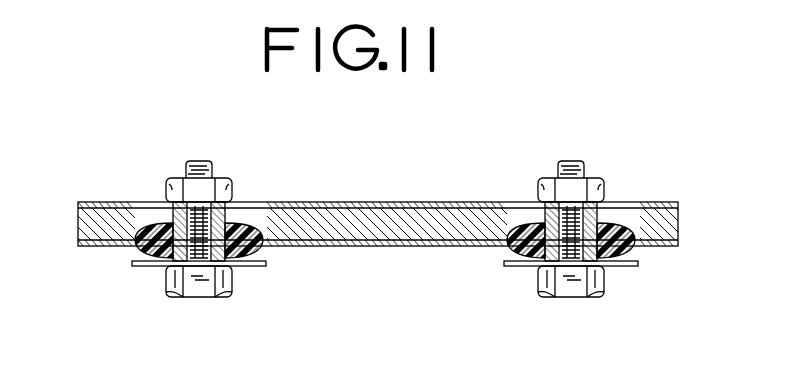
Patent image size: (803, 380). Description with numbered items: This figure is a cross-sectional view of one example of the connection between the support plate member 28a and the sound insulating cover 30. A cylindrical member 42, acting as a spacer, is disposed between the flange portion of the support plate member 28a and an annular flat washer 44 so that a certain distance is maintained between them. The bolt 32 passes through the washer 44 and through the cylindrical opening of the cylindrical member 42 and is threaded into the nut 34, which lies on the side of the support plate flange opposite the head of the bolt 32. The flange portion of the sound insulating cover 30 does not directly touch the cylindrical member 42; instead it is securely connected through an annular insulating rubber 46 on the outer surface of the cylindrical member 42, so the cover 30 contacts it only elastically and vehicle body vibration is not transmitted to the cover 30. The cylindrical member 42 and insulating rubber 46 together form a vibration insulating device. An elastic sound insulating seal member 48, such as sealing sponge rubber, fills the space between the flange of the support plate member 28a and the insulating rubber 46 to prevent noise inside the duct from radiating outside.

The support plate member 28a is at (322, 202).
The elastic sound insulating seal member 48 is at (400, 210).
The sound insulating cover 30 is at (368, 247).
The nut 34 is at (600, 190).
The cylindrical member 42 is at (627, 208).
The annular insulating rubber 46 is at (627, 253).
The annular flat washer 44 is at (628, 270).
The bolt 32 is at (602, 298).